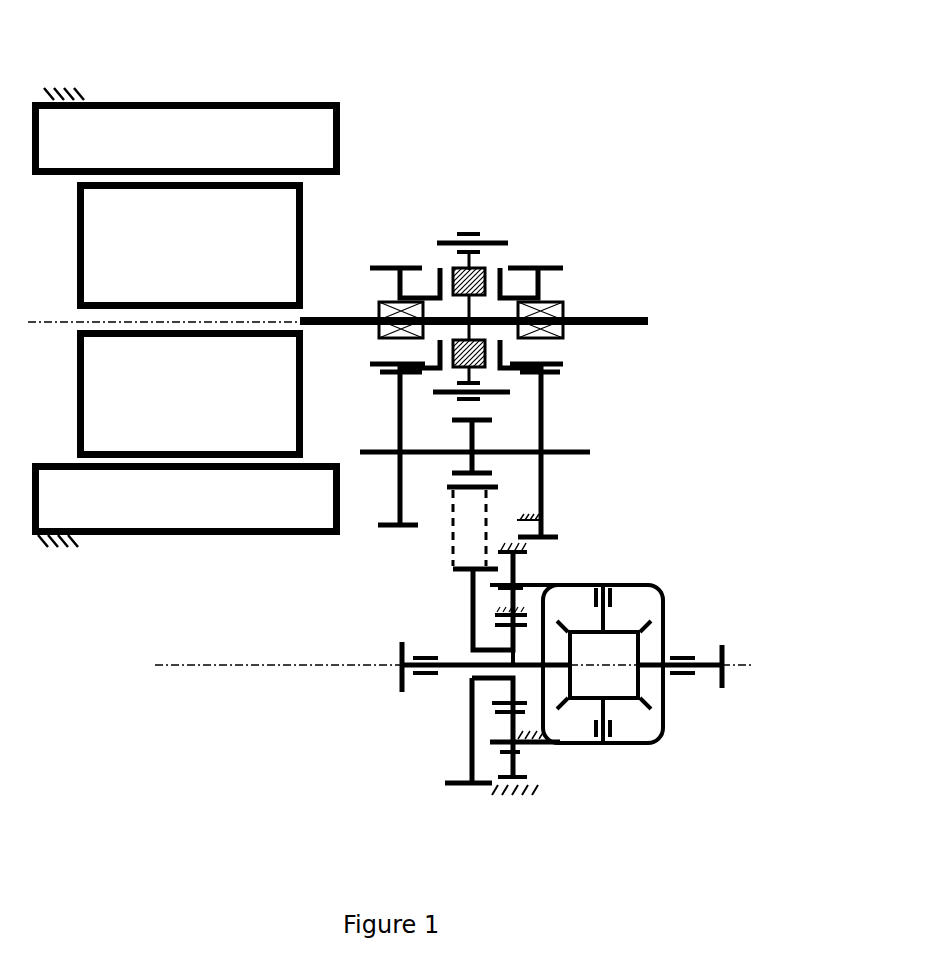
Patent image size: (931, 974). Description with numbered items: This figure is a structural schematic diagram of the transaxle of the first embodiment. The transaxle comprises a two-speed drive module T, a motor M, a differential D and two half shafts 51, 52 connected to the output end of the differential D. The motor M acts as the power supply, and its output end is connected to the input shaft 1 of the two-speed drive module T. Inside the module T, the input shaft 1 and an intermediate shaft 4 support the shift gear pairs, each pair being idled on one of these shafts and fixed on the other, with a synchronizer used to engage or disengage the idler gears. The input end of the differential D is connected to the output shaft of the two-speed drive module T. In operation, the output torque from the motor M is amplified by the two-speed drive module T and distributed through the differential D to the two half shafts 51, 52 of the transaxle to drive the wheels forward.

The motor M is at (280, 127).
The two-speed drive module T is at (529, 196).
The input shaft 1 is at (605, 313).
The intermediate shaft 4 is at (577, 447).
The differential D is at (632, 582).
The half shaft 51 is at (453, 663).
The half shaft 52 is at (713, 657).